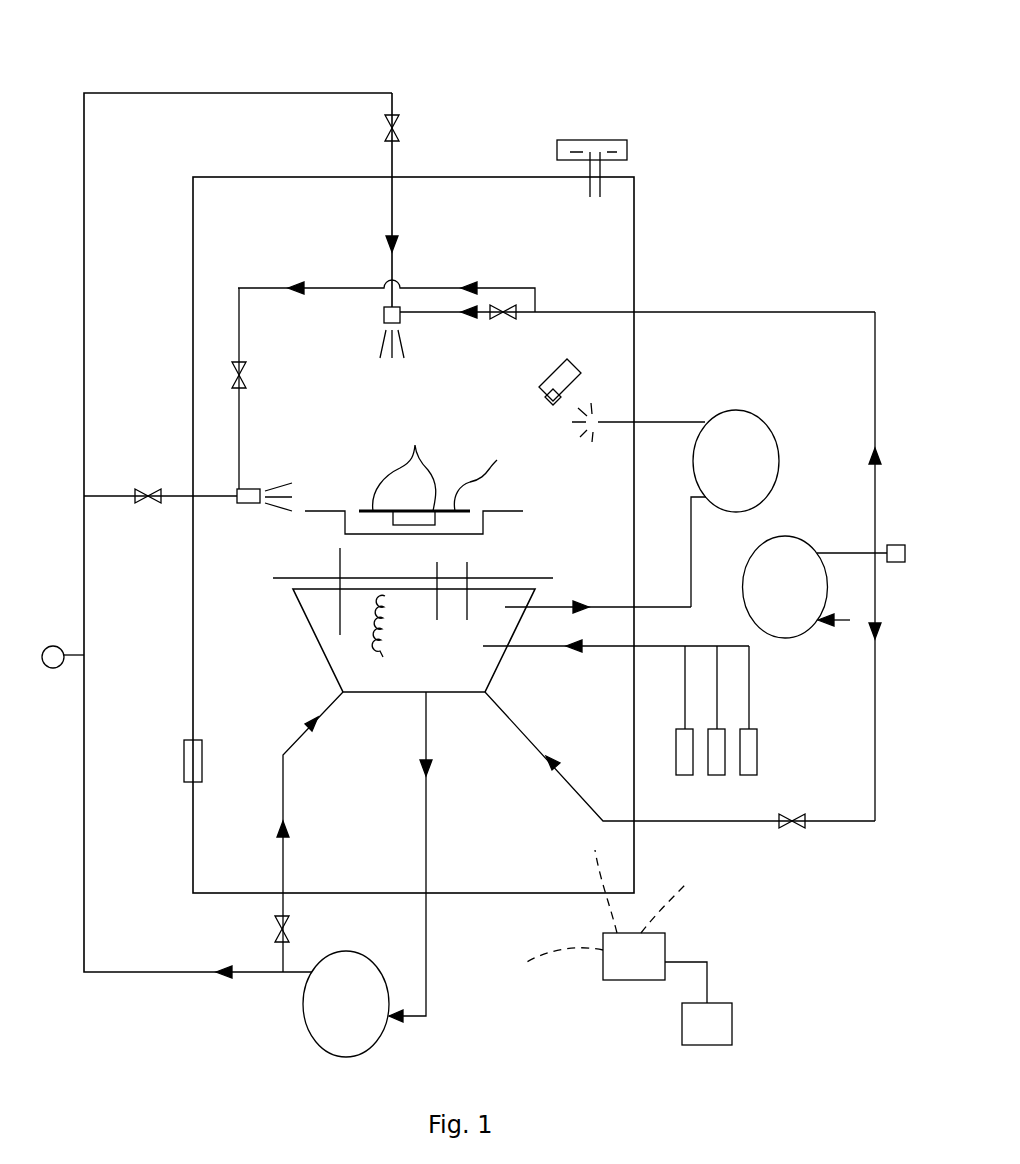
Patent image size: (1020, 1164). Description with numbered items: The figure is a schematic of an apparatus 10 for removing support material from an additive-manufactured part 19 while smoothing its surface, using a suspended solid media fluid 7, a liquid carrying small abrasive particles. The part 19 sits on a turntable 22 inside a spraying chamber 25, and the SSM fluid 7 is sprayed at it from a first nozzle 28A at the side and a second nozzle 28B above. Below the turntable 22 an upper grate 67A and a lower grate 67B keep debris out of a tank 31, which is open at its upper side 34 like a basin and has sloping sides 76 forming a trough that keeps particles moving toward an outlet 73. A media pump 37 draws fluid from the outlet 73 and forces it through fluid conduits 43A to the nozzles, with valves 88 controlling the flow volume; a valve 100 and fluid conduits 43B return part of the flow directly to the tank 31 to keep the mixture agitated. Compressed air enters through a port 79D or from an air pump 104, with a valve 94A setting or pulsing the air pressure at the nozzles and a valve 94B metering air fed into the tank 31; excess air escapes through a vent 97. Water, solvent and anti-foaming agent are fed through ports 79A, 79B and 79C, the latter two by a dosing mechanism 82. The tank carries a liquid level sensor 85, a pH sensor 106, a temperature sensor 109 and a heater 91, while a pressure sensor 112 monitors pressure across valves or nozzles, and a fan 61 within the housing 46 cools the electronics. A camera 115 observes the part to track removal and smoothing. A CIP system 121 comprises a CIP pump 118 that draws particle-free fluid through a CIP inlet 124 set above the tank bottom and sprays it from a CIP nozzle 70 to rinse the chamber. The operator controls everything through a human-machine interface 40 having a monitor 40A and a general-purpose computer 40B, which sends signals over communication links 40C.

The apparatus 10 is at (441, 66).
The spraying chamber 25 is at (502, 238).
The valves 88 is at (401, 118).
The vent 97 is at (619, 140).
The valve 94A is at (511, 320).
The second nozzle 28B is at (403, 316).
The first nozzle 28A is at (246, 505).
The suspended solid media fluid 7 is at (378, 345).
The camera 115 is at (540, 366).
The CIP nozzle 70 is at (603, 410).
The CIP pump 118 is at (755, 473).
The CIP system 121 is at (767, 398).
The air pump 104 is at (804, 599).
The port 79D is at (888, 546).
The upper grate 67A is at (510, 510).
The upper side 34 is at (362, 578).
The additive-manufactured part 19 is at (407, 464).
The turntable 22 is at (489, 469).
The lower grate 67B is at (302, 585).
The sloping sides 76 is at (305, 620).
The liquid level sensor 85 is at (340, 562).
The pH sensor 106 is at (468, 565).
The CIP inlet 124 is at (528, 605).
The port 79B is at (715, 665).
The port 79C is at (749, 680).
The dosing mechanism 82 is at (768, 750).
The heater 91 is at (382, 648).
The temperature sensor 109 is at (438, 612).
The port 79A is at (685, 678).
The outlet 73 is at (413, 695).
The tank 31 is at (458, 695).
The valve 94B is at (792, 830).
The fluid conduits 43B is at (283, 805).
The valve 100 is at (292, 935).
The media pump 37 is at (360, 1016).
The fluid conduits 43A is at (120, 972).
The fan 61 is at (184, 758).
The housing 46 is at (193, 836).
The pressure sensor 112 is at (58, 668).
The human-machine interface 40 is at (752, 981).
The general-purpose computer 40B is at (655, 968).
The monitor 40A is at (708, 1024).
The communication links 40C is at (600, 873).